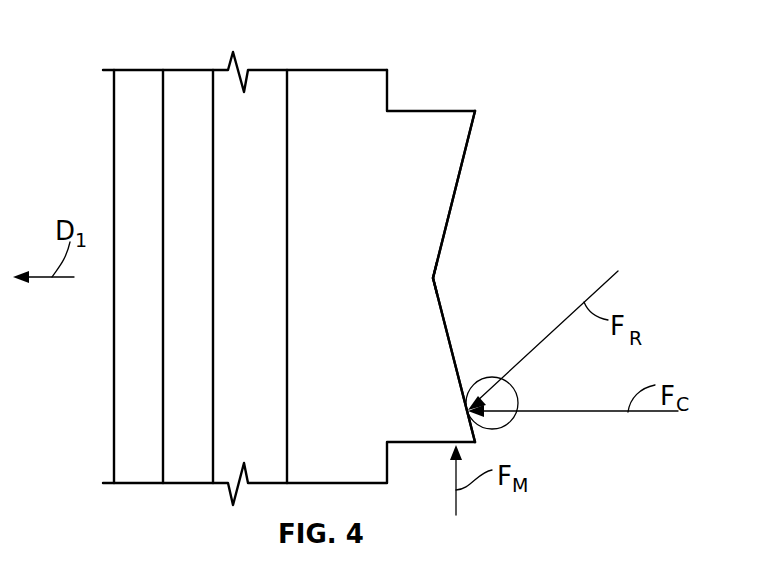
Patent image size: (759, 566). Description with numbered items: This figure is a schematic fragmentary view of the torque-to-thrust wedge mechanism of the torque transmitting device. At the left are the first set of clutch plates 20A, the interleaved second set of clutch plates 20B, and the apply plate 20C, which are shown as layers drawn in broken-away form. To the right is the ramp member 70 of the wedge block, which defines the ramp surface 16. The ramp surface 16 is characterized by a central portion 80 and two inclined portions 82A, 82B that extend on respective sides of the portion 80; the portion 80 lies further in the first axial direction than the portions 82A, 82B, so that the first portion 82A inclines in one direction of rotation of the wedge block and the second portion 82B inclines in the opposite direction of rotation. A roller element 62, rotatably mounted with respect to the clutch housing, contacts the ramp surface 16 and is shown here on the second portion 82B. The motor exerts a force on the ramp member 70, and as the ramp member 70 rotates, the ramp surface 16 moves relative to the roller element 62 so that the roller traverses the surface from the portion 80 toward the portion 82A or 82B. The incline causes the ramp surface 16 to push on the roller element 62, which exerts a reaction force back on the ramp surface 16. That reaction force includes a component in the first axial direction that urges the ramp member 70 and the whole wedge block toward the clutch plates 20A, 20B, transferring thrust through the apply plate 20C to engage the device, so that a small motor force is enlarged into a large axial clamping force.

The first set of clutch plates 20A is at (135, 88).
The second set of clutch plates 20B is at (188, 87).
The apply plate 20C is at (270, 88).
The ramp member 70 is at (440, 130).
The ramp surface 16 is at (472, 160).
The first portion of ramp surface 82A is at (455, 197).
The portion of ramp surface 80 is at (436, 277).
The second portion of ramp surface 82B is at (447, 318).
The roller element 62 is at (514, 381).